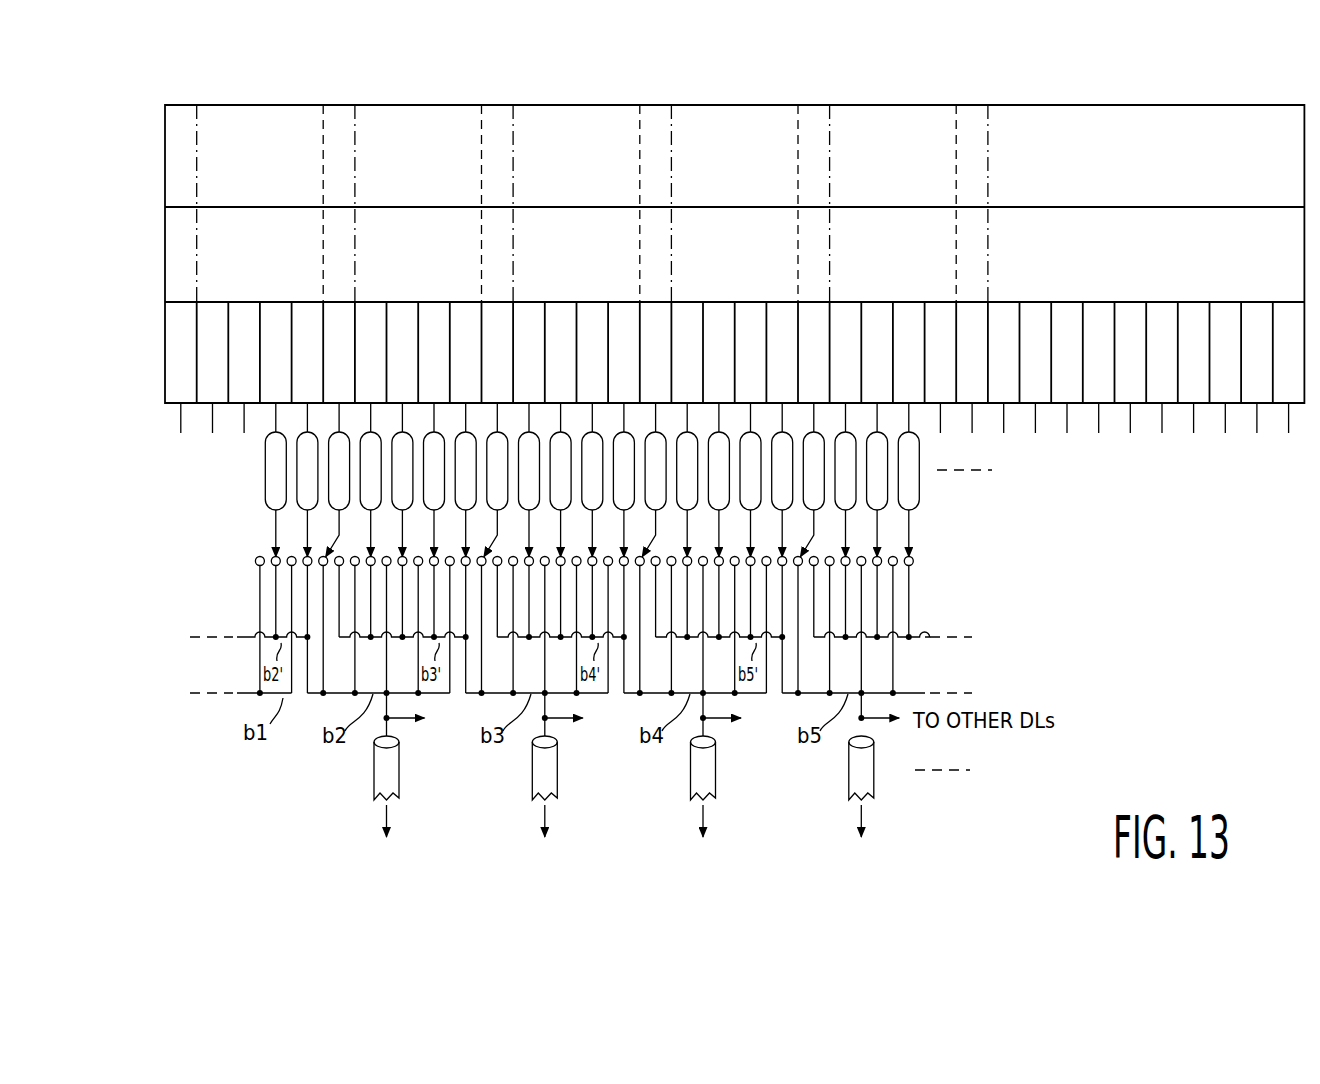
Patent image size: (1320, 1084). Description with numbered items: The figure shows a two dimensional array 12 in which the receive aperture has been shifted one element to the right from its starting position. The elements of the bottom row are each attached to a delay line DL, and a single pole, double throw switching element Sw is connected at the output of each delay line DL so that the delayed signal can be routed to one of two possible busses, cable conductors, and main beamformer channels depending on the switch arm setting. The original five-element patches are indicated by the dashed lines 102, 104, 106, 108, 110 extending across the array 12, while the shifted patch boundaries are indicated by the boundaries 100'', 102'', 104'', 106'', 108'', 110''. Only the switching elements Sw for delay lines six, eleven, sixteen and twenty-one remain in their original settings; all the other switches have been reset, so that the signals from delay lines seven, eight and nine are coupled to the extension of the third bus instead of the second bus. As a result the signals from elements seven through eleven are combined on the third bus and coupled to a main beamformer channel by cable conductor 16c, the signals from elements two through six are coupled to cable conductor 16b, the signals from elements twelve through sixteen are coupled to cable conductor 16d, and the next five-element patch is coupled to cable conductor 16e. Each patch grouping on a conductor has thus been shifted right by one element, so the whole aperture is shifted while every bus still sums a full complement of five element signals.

The two dimensional array 12 is at (181, 122).
The patch boundary 100'' is at (237, 203).
The patch boundary 102'' is at (399, 203).
The patch boundary 104'' is at (557, 203).
The patch boundary 106'' is at (709, 203).
The patch boundary 108'' is at (867, 203).
The patch boundary 110'' is at (1030, 203).
The dashed line 102 is at (287, 203).
The dashed line 104 is at (440, 203).
The dashed line 106 is at (597, 203).
The dashed line 108 is at (755, 203).
The dashed line 110 is at (914, 203).
The cable conductor 16b is at (373, 788).
The cable conductor 16c is at (531, 788).
The cable conductor 16d is at (689, 788).
The cable conductor 16e is at (847, 788).
The delay line DL is at (260, 469).
The switching element Sw is at (250, 562).